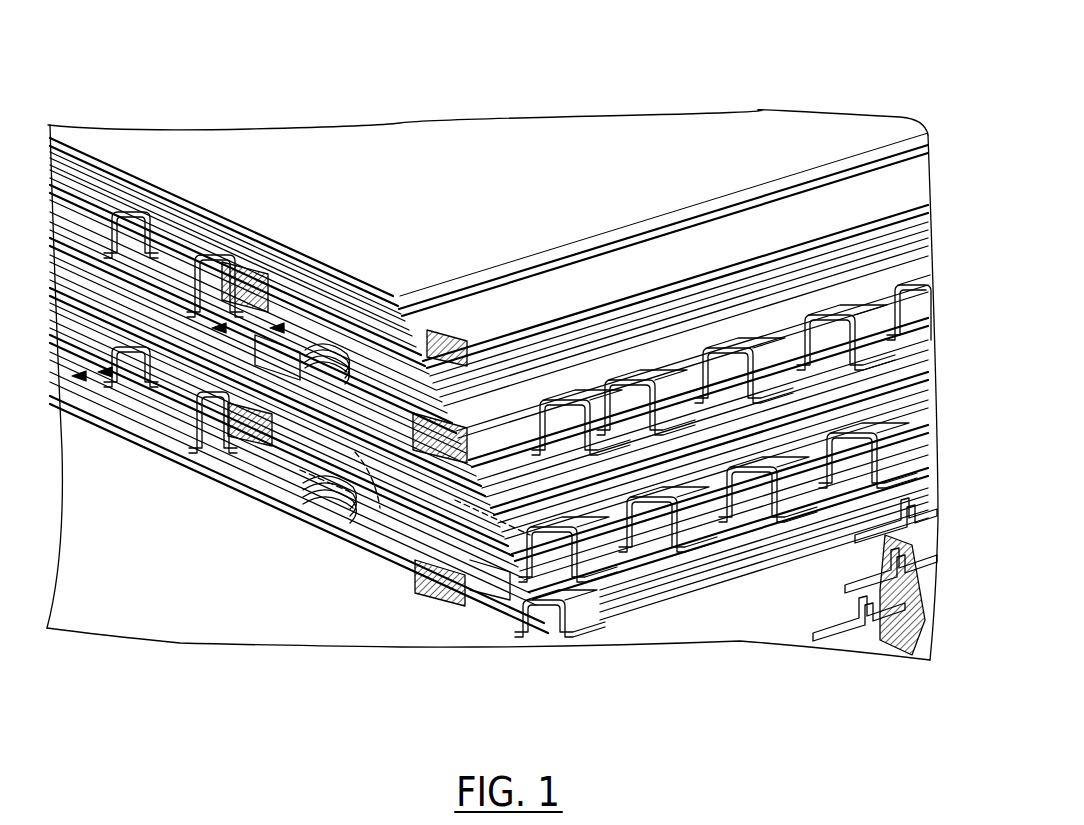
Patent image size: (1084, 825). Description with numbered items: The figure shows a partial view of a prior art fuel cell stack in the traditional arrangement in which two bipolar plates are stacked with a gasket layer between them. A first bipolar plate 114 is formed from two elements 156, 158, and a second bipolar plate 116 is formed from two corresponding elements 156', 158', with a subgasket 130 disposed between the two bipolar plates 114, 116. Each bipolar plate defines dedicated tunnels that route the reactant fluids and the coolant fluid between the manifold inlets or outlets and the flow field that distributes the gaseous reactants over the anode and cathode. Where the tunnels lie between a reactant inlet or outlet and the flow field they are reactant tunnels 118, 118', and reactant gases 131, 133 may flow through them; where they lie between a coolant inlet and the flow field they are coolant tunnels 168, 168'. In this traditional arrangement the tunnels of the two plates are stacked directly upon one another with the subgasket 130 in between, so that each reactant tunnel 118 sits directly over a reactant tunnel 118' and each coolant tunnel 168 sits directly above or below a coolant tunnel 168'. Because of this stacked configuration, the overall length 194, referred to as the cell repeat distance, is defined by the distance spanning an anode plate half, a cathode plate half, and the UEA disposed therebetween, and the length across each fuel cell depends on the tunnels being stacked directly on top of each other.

The first bipolar plate 114 is at (275, 335).
The second bipolar plate 116 is at (248, 430).
The reactant tunnel 118 is at (702, 365).
The reactant tunnel 118' is at (726, 603).
The subgasket 130 is at (930, 268).
The reactant gas 131 is at (168, 298).
The reactant gas 133 is at (330, 355).
The element of first bipolar plate 156 is at (446, 306).
The element of second bipolar plate 156' is at (480, 627).
The element of first bipolar plate 158 is at (406, 349).
The element of second bipolar plate 158' is at (433, 631).
The coolant tunnel 168 is at (664, 228).
The coolant tunnel 168' is at (718, 574).
The overall length 194 is at (242, 262).